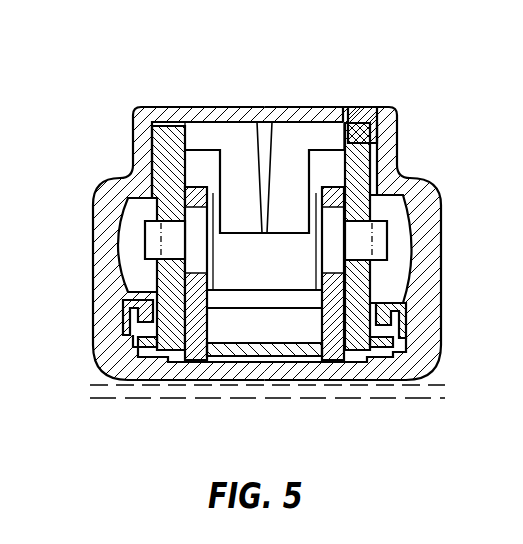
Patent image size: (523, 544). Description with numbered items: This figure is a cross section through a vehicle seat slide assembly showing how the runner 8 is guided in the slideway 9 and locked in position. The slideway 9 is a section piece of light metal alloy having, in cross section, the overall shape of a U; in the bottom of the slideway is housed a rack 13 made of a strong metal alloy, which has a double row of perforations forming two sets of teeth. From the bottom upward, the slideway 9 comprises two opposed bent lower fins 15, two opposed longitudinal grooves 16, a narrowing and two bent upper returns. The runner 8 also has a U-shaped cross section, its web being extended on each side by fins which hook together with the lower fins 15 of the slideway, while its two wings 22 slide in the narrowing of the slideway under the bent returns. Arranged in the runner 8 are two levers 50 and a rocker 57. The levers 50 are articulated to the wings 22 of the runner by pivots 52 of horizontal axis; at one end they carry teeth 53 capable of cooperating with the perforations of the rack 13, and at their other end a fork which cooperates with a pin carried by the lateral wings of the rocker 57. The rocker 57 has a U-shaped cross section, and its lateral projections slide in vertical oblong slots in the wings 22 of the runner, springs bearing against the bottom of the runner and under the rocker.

The slideway 9 is at (427, 243).
The longitudinal grooves 16 is at (396, 217).
The rocker 57 is at (190, 110).
The wings 22 is at (360, 127).
The teeth 53 is at (196, 358).
The runner 8 is at (210, 327).
The levers 50 is at (165, 283).
The lower fins 15 is at (400, 303).
The pivots 52 is at (147, 240).
The rack 13 is at (267, 350).